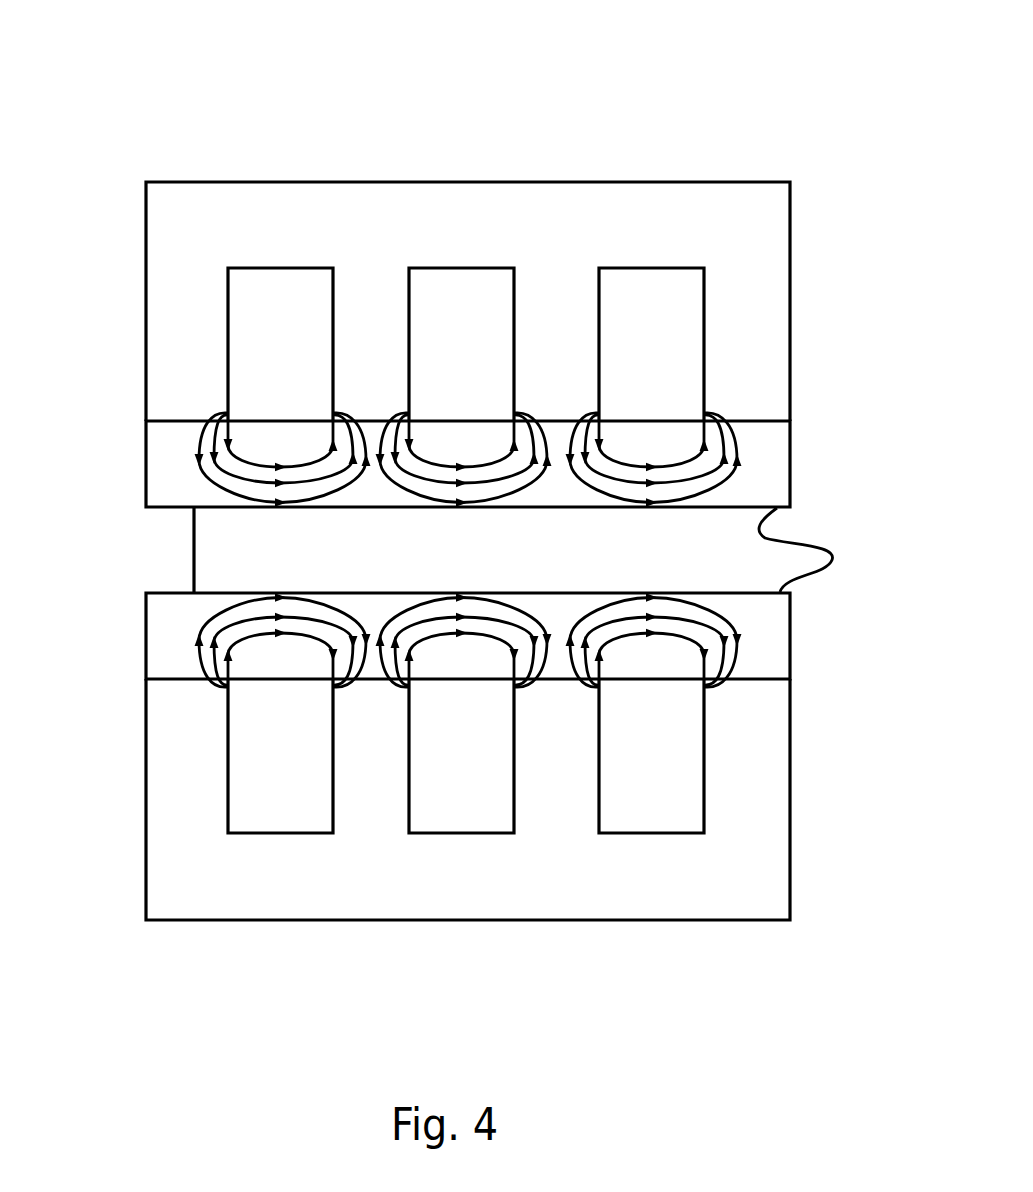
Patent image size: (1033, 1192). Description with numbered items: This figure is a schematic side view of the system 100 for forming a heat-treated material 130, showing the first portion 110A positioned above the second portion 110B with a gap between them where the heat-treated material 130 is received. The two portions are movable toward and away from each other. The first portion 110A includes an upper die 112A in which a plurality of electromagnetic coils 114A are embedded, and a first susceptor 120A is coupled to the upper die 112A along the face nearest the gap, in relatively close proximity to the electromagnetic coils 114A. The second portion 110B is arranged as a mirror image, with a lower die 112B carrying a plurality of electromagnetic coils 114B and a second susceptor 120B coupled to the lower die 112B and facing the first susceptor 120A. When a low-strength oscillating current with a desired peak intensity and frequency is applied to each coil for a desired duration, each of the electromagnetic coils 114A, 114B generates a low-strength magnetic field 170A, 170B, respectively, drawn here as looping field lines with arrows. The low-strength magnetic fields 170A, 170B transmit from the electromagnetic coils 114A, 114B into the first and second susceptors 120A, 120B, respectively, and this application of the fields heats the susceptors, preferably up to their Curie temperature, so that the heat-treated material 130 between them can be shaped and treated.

The system 100 is at (173, 114).
The first portion 110A is at (126, 240).
The upper die 112A is at (267, 212).
The electromagnetic coils 114A is at (245, 333).
The first susceptor 120A is at (160, 488).
The low-strength magnetic field 170A is at (193, 452).
The heat-treated material 130 is at (190, 560).
The second portion 110B is at (126, 818).
The lower die 112B is at (165, 785).
The electromagnetic coils 114B is at (248, 768).
The second susceptor 120B is at (167, 632).
The low-strength magnetic field 170B is at (193, 660).